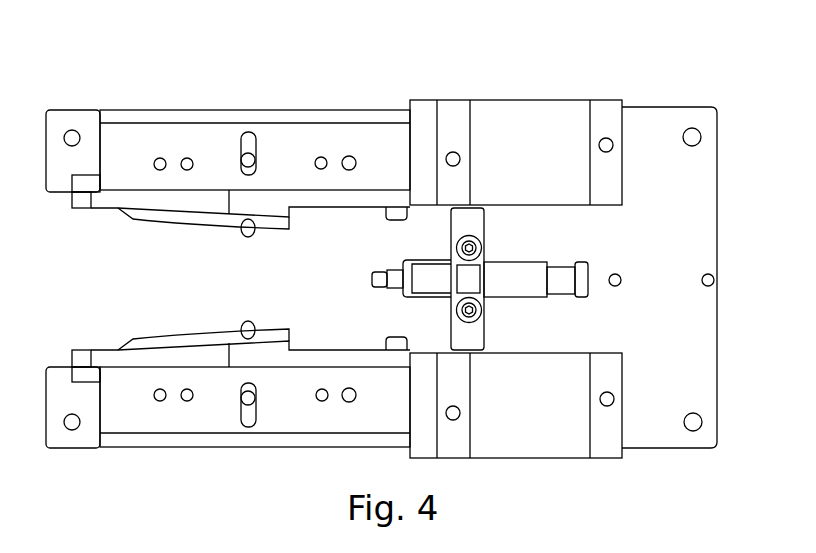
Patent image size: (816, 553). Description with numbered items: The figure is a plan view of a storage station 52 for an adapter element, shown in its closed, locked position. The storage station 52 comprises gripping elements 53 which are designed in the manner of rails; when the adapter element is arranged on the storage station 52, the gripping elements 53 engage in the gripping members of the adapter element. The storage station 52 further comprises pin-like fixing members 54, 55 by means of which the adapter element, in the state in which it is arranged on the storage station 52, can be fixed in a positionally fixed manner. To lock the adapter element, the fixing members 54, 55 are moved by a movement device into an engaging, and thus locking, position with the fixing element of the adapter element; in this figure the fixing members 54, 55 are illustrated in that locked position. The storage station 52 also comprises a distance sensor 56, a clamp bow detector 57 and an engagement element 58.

The storage station 52 is at (670, 86).
The gripping elements 53 is at (150, 222).
The fixing member 54 is at (245, 321).
The fixing member 55 is at (252, 238).
The distance sensor 56 is at (577, 251).
The clamp bow detector 57 is at (439, 325).
The engagement element 58 is at (387, 270).